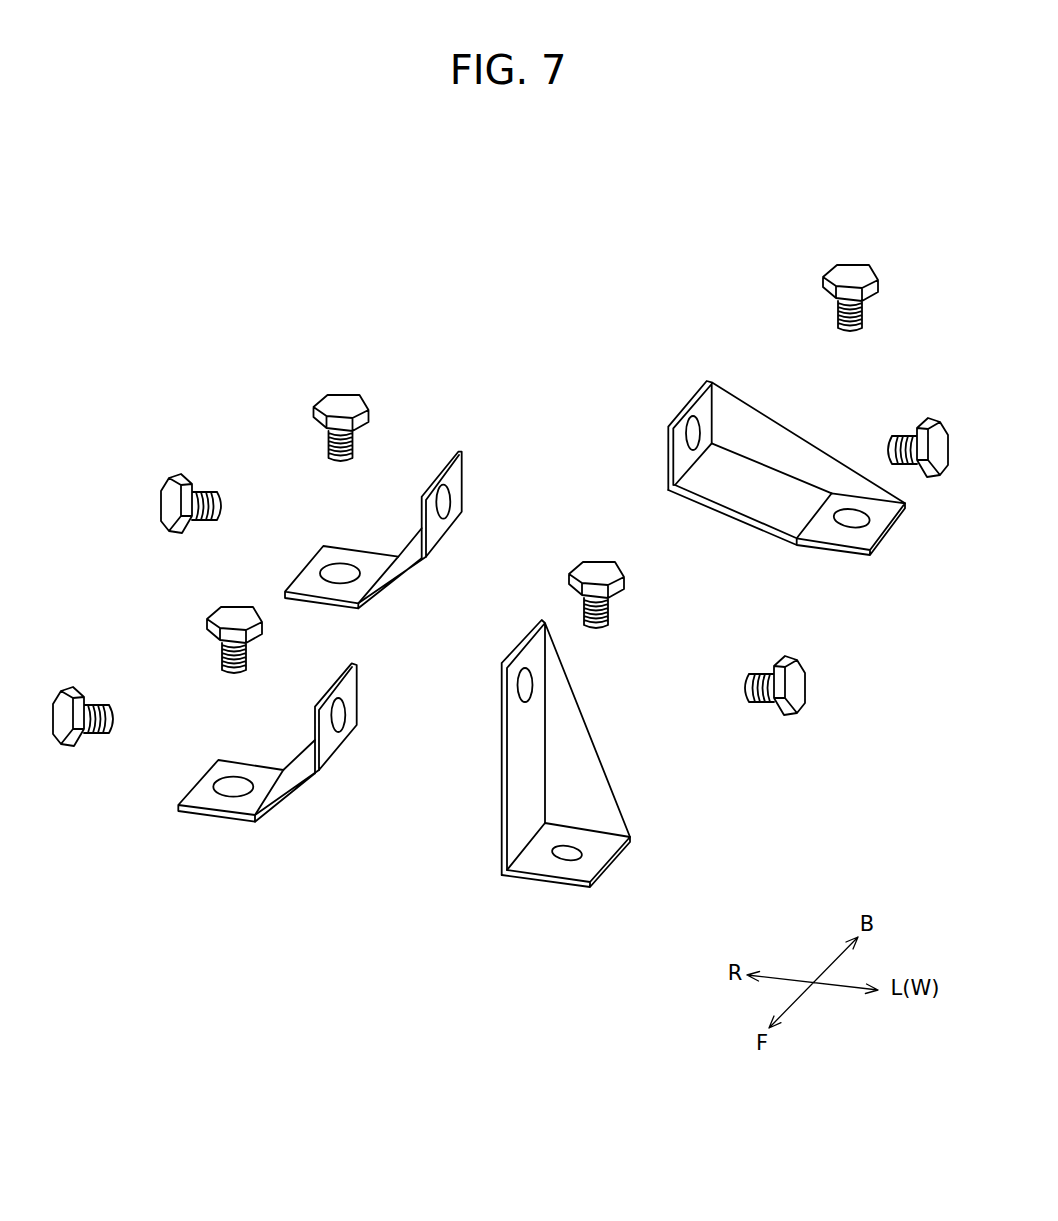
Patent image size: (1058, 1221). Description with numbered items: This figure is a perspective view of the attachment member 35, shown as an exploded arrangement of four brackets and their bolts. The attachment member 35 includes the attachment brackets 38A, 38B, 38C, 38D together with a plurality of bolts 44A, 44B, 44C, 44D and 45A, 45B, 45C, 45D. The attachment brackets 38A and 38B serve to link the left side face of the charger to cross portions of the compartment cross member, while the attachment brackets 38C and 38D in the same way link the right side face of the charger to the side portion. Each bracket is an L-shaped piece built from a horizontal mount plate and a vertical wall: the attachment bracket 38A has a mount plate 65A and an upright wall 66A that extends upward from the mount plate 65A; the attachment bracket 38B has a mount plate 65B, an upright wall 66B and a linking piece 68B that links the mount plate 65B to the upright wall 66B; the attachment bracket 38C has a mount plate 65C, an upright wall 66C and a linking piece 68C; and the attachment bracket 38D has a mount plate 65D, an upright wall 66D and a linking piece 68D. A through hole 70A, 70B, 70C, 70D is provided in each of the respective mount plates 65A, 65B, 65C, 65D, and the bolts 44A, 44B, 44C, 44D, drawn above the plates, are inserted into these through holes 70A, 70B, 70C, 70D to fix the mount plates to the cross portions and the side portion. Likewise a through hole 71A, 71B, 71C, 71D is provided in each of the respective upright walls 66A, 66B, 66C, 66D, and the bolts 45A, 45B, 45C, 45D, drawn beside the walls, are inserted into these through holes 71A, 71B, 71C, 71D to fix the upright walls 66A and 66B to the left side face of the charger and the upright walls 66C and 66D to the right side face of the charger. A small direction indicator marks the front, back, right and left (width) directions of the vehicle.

The attachment member 35 is at (372, 255).
The attachment bracket 38A is at (502, 753).
The attachment bracket 38B is at (744, 354).
The attachment bracket 38C is at (166, 679).
The attachment bracket 38D is at (297, 493).
The bolt 44A is at (596, 575).
The bolt 44B is at (850, 270).
The bolt 44C is at (232, 613).
The bolt 44D is at (343, 400).
The bolt 45A is at (777, 657).
The bolt 45B is at (926, 420).
The bolt 45C is at (65, 688).
The bolt 45D is at (175, 478).
The mount plate 65A is at (558, 888).
The mount plate 65B is at (836, 553).
The mount plate 65C is at (205, 778).
The mount plate 65D is at (320, 556).
The upright wall 66A is at (528, 731).
The upright wall 66B is at (668, 450).
The upright wall 66C is at (332, 708).
The upright wall 66D is at (457, 448).
The linking piece 68B is at (703, 508).
The linking piece 68C is at (283, 778).
The linking piece 68D is at (399, 557).
The through hole 70A is at (572, 853).
The through hole 70B is at (858, 519).
The through hole 70C is at (222, 784).
The through hole 70D is at (340, 574).
The through hole 71A is at (530, 686).
The through hole 71B is at (692, 430).
The through hole 71C is at (342, 713).
The through hole 71D is at (447, 502).